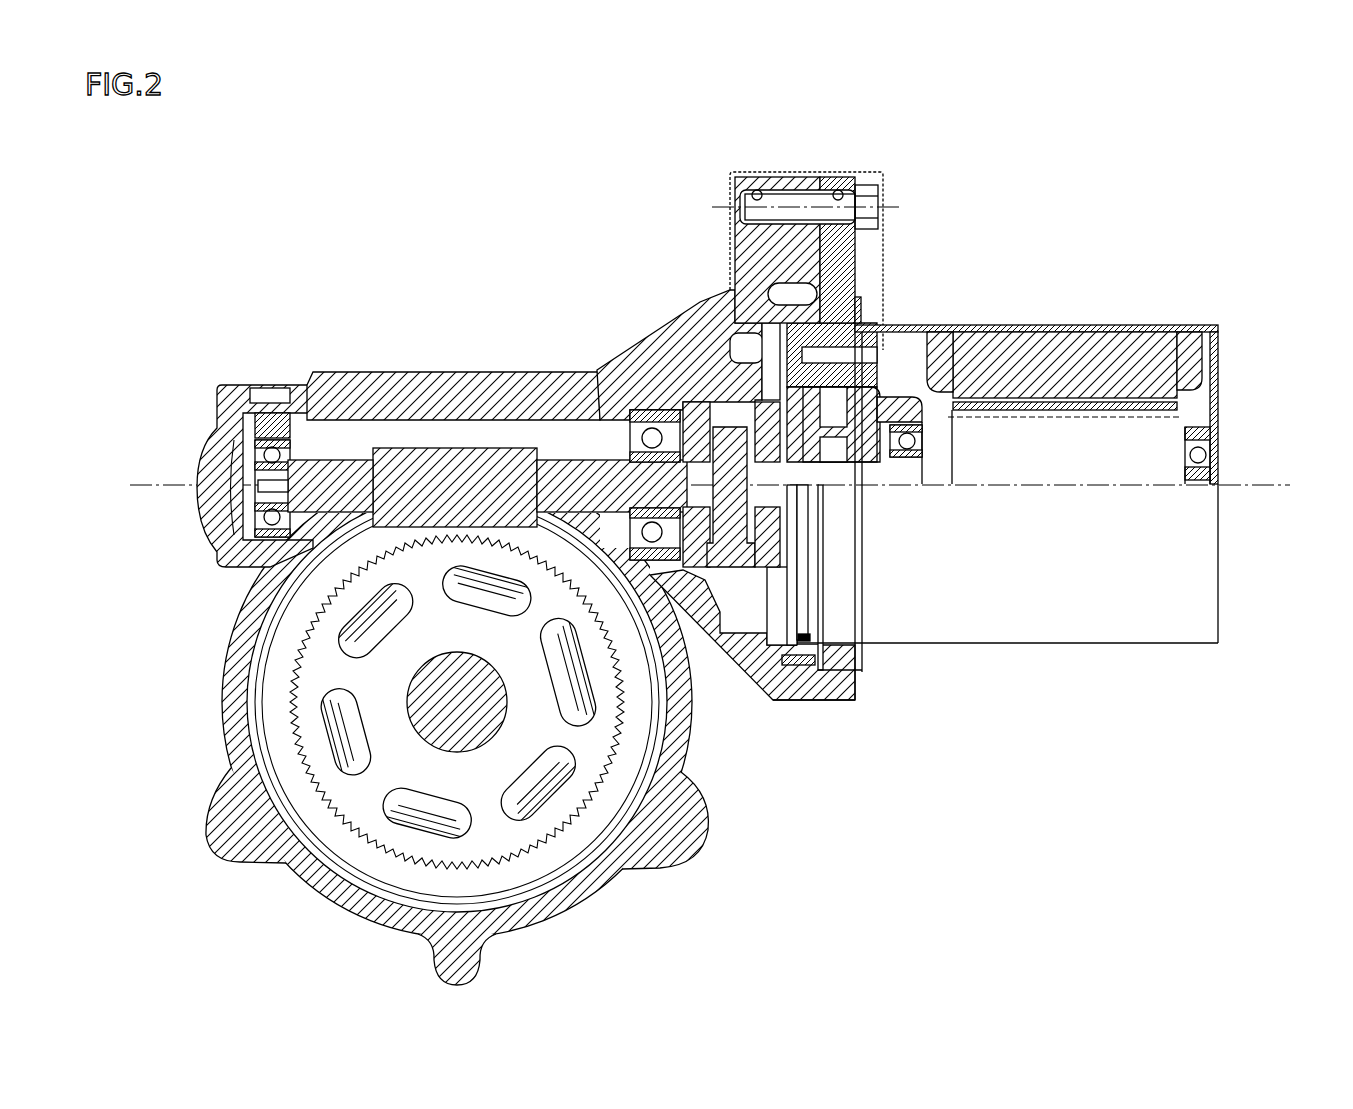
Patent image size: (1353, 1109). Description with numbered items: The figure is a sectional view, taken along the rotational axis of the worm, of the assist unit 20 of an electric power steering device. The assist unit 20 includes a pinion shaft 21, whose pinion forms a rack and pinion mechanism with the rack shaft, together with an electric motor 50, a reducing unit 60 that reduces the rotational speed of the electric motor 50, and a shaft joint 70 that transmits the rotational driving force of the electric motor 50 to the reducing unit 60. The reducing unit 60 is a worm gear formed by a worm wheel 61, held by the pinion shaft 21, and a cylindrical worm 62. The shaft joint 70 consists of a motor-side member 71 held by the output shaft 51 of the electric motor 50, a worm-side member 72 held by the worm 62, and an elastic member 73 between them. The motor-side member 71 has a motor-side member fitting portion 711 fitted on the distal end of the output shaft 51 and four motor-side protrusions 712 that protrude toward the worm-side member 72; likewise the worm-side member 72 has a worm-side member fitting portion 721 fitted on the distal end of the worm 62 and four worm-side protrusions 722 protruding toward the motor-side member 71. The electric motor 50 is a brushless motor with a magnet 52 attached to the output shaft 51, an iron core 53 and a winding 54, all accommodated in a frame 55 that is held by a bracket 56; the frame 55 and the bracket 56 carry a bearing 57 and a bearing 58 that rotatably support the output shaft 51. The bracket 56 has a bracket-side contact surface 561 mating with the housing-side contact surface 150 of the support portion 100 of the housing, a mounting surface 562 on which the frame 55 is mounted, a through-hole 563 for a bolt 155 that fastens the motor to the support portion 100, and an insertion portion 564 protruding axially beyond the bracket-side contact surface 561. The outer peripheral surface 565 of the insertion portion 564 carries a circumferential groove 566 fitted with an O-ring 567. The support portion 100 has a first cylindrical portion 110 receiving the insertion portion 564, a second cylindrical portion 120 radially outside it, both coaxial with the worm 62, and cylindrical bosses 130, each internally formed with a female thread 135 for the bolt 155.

The assist unit 20 is at (1240, 143).
The pinion shaft 21 is at (503, 740).
The electric motor 50 is at (1046, 440).
The output shaft 51 is at (886, 397).
The magnet 52 is at (1066, 400).
The iron core 53 is at (1127, 325).
The winding 54 is at (1183, 333).
The frame 55 is at (1003, 324).
The bracket 56 is at (846, 212).
The bearing 57 is at (1206, 433).
The bearing 58 is at (908, 434).
The reducing unit 60 is at (452, 599).
The worm wheel 61 is at (342, 527).
The worm 62 is at (440, 440).
The shaft joint 70 is at (680, 369).
The motor-side member 71 is at (701, 390).
The worm-side member 72 is at (619, 390).
The elastic member 73 is at (820, 395).
The support portion 100 is at (817, 663).
The first cylindrical portion 110 is at (795, 660).
The second cylindrical portion 120 is at (790, 700).
The boss 130 is at (740, 176).
The female thread 135 is at (757, 190).
The housing-side contact surface 150 is at (822, 247).
The bolt 155 is at (878, 205).
The bracket-side contact surface 561 is at (810, 240).
The mounting surface 562 is at (862, 310).
The through-hole 563 is at (838, 192).
The insertion portion 564 is at (806, 662).
The outer peripheral surface 565 is at (815, 665).
The groove 566 is at (800, 652).
The O-ring 567 is at (815, 635).
The motor-side member fitting portion 711 is at (767, 412).
The motor-side protrusions 712 is at (652, 410).
The worm-side member fitting portion 721 is at (728, 497).
The worm-side protrusions 722 is at (695, 425).